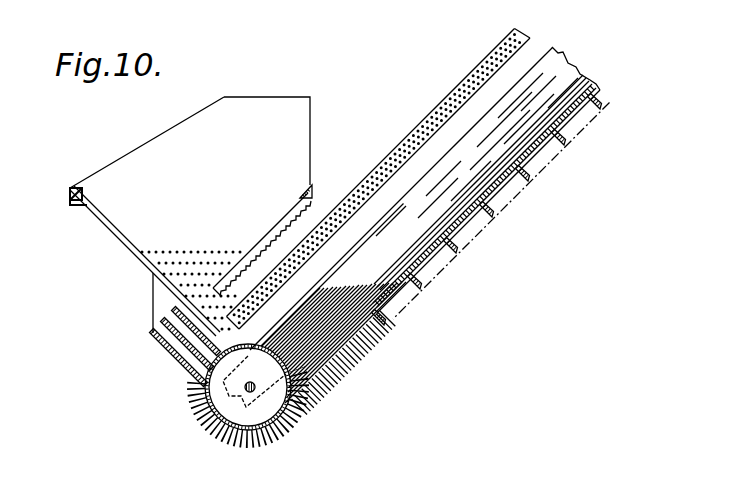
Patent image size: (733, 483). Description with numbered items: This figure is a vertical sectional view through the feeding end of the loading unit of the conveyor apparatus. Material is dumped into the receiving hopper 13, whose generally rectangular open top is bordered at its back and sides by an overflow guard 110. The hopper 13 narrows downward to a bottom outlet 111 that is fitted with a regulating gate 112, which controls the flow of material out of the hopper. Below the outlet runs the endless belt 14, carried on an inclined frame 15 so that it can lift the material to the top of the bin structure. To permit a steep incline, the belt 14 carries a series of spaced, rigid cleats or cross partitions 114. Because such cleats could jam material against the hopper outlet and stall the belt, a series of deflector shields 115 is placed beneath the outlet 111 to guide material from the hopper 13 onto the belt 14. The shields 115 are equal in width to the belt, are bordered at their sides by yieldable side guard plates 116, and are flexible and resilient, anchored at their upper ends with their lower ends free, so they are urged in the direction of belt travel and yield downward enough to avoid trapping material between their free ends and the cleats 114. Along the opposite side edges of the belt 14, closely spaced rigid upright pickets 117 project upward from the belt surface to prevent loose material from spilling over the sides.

The receiving hopper 13 is at (95, 212).
The endless belt 14 is at (523, 48).
The inclined frame 15 is at (580, 74).
The overflow guard 110 is at (282, 112).
The bottom outlet 111 is at (190, 292).
The regulating gate 112 is at (312, 230).
The cleats or cross partitions 114 is at (468, 74).
The deflector shields 115 is at (185, 336).
The side guard plates 116 is at (292, 218).
The pickets 117 is at (198, 396).